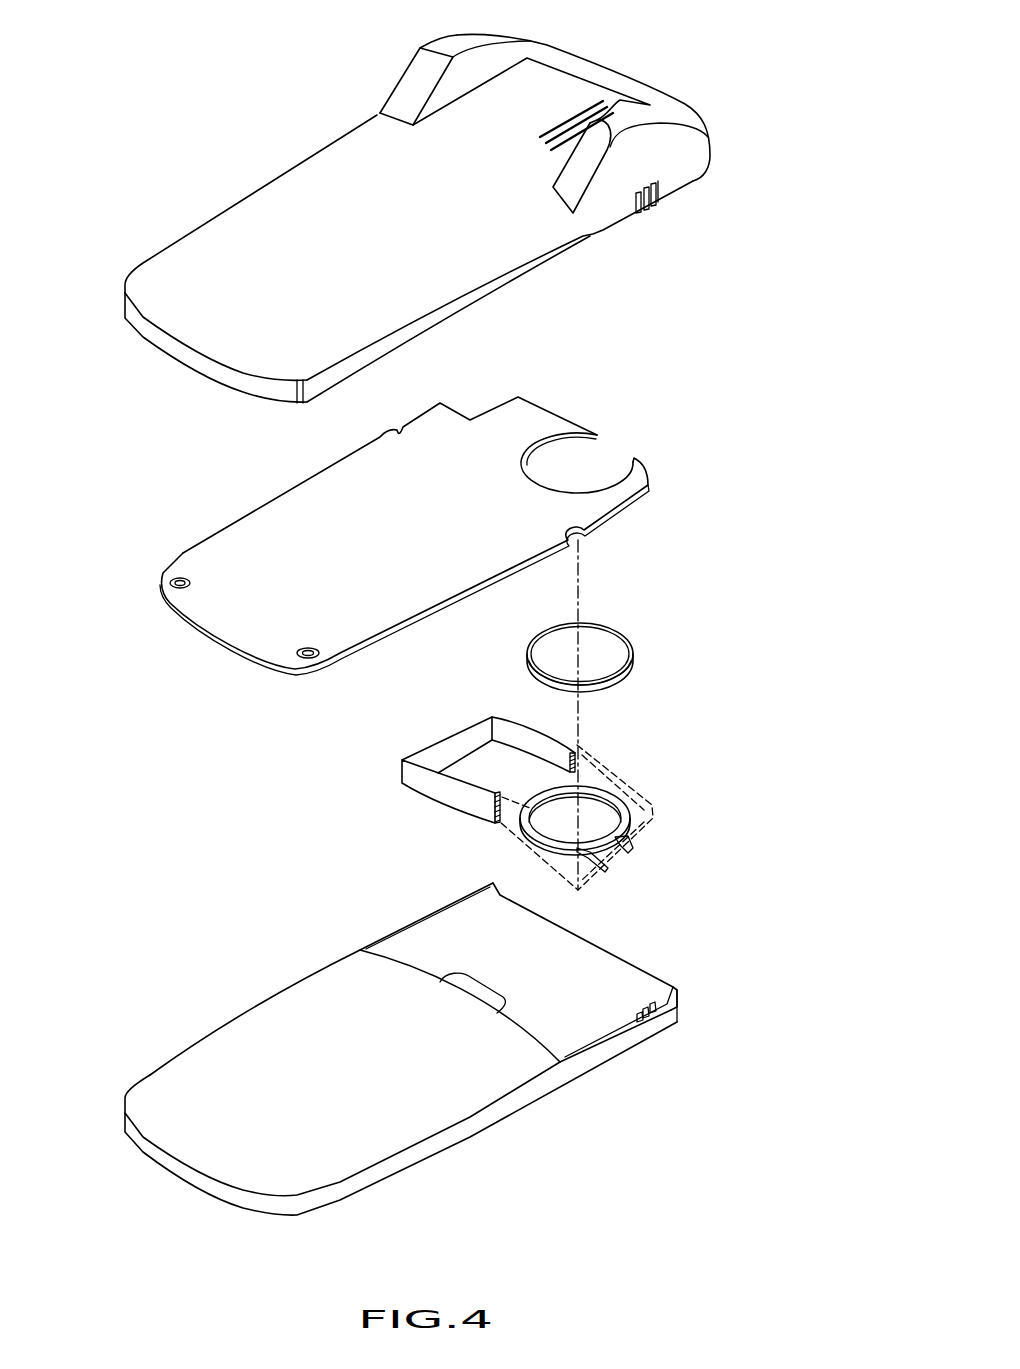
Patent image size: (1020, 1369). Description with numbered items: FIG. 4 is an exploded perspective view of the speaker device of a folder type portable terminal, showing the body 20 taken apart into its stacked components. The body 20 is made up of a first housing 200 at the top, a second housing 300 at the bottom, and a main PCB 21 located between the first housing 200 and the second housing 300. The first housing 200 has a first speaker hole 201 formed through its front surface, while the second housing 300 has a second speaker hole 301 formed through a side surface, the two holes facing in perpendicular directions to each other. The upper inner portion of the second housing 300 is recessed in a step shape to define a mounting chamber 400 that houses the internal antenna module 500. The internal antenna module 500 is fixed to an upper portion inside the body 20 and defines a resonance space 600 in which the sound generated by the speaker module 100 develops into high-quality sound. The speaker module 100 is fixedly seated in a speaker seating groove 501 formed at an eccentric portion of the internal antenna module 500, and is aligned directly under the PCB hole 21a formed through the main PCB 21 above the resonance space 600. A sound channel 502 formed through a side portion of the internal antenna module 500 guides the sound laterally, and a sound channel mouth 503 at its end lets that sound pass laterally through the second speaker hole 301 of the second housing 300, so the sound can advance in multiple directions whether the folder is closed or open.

The body 20 is at (420, 202).
The first housing 200 is at (420, 202).
The first speaker hole 201 is at (627, 95).
The second speaker hole 301 is at (657, 203).
The main PCB 21 is at (425, 500).
The PCB hole 21a is at (602, 463).
The speaker module 100 is at (643, 629).
The internal antenna module 500 is at (619, 799).
The speaker seating groove 501 is at (617, 800).
The sound channel 502 is at (642, 830).
The sound channel mouth 503 is at (620, 860).
The resonance space 600 is at (568, 820).
The mounting chamber 400 is at (640, 983).
The second housing 300 is at (426, 1049).